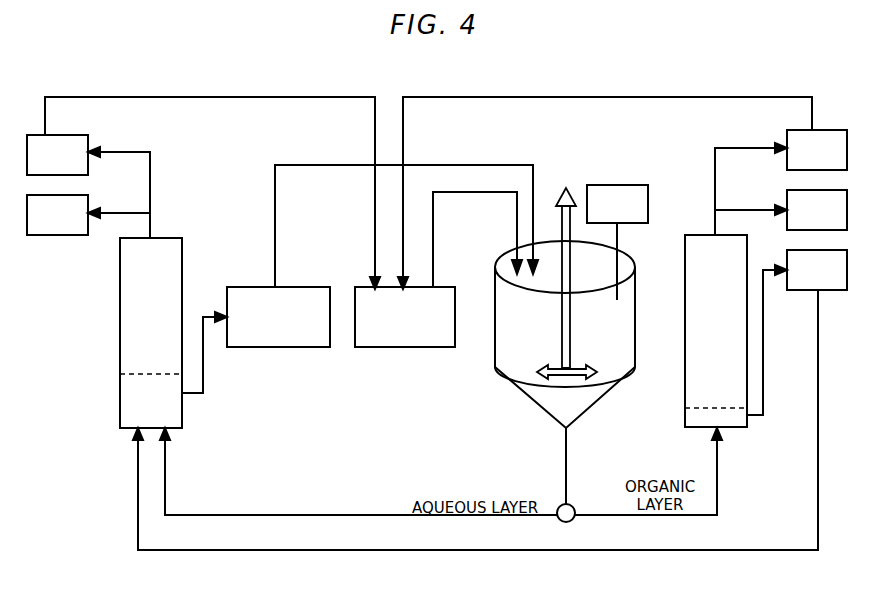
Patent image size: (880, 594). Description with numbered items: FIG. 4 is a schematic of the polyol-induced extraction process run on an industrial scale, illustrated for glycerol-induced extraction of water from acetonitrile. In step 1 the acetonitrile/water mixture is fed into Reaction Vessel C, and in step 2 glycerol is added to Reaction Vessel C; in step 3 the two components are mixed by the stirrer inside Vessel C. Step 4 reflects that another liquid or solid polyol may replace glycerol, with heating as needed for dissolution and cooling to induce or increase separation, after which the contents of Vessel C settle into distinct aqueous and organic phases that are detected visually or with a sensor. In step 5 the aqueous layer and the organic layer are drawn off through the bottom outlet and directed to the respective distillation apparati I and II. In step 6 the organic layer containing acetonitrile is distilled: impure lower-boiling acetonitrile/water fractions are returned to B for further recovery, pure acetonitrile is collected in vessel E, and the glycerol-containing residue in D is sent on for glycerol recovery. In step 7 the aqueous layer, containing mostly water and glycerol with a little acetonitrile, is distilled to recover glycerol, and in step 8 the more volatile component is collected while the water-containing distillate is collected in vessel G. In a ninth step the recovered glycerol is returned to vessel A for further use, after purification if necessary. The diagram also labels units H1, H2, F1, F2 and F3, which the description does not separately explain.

The acetonitrile/water addition step 1 is at (477, 239).
The glycerol addition step 2 is at (406, 226).
The mixing step 3 is at (572, 283).
The polyol substitution / phase separation step 4 is at (443, 475).
The phase transfer step 5 is at (734, 189).
The organic layer distillation step 6 is at (138, 333).
The aqueous layer distillation step 7 is at (136, 192).
The distillate collection step 8 is at (206, 352).
The glycerol vessel A is at (278, 317).
The acetonitrile/water recovery vessel B is at (405, 317).
The reaction vessel C is at (565, 334).
The residue vessel D is at (617, 242).
The pure acetonitrile vessel E is at (716, 331).
The water distillate vessel G is at (151, 333).
The unit H1 is at (57, 155).
The unit H2 is at (57, 215).
The unit F1 is at (817, 150).
The unit F2 is at (817, 210).
The unit F3 is at (817, 270).